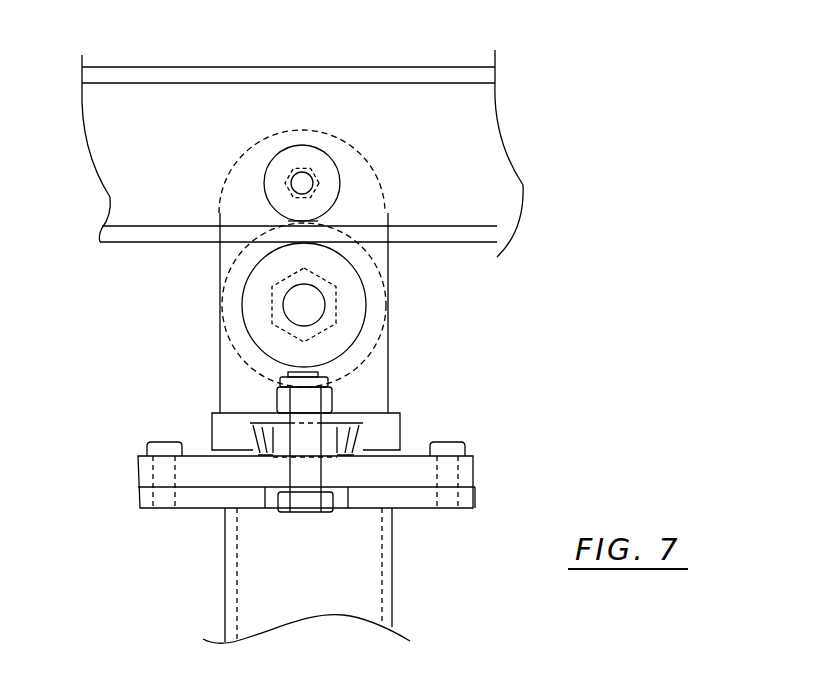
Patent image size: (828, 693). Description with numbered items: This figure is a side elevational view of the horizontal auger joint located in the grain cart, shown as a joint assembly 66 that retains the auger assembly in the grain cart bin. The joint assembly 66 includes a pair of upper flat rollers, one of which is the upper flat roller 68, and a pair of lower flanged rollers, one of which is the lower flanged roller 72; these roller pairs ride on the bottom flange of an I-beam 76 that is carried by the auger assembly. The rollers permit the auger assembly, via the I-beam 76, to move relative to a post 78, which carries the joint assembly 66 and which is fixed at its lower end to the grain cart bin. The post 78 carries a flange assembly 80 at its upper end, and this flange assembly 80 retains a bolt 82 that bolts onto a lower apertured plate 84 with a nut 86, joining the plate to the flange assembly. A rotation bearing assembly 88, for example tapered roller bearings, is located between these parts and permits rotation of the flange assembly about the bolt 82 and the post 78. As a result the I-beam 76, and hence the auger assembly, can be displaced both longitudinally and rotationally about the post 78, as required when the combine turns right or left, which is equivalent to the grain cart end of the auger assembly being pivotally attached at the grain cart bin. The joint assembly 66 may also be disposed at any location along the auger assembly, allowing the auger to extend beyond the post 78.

The joint assembly 66 is at (479, 350).
The upper flat roller 68 is at (338, 163).
The lower flanged roller 72 is at (367, 253).
The I-beam 76 is at (412, 67).
The post 78 is at (392, 543).
The flange assembly 80 is at (473, 468).
The bolt 82 is at (322, 480).
The lower apertured plate 84 is at (216, 413).
The nut 86 is at (328, 394).
The rotation bearing assembly 88 is at (367, 427).